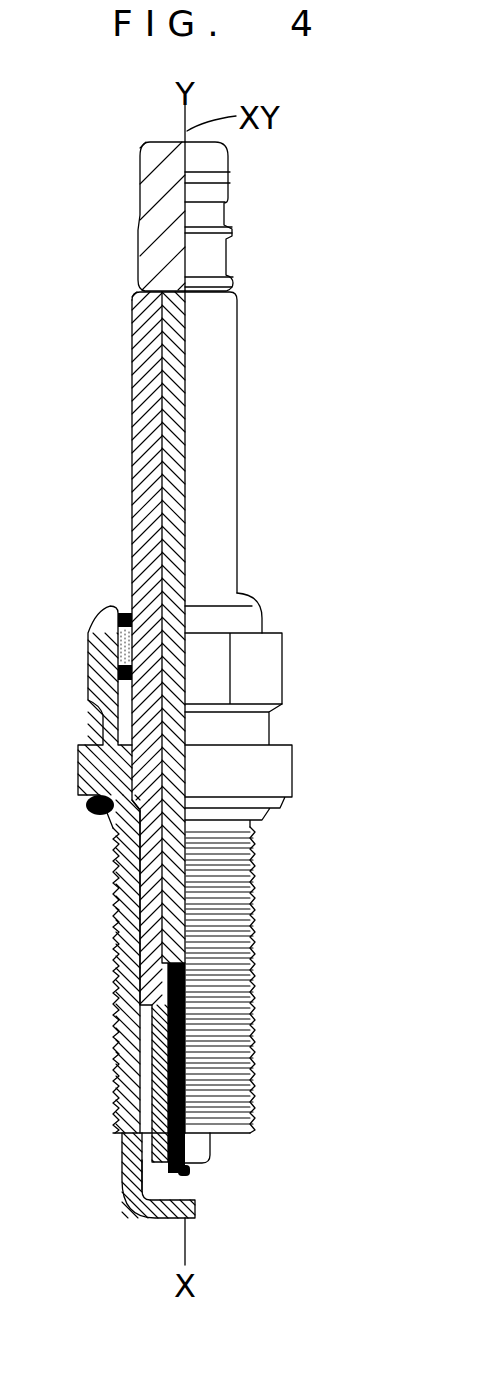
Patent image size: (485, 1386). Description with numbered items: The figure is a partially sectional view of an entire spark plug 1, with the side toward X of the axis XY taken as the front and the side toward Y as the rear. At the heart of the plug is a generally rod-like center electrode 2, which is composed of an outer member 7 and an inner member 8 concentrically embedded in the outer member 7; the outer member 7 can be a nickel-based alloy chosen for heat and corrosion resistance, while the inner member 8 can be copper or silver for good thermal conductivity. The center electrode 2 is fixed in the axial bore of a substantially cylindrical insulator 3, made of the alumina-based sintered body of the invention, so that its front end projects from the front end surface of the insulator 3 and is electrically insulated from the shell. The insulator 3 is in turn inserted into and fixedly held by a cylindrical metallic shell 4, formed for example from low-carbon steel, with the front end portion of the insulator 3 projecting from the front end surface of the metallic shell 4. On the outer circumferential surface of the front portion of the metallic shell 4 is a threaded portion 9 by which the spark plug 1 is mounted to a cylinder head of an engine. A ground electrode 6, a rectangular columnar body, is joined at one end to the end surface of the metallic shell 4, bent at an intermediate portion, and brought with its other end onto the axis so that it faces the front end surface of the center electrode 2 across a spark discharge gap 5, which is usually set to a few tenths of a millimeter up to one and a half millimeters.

The spark plug 1 is at (333, 558).
The center electrode 2 is at (202, 1176).
The insulator 3 is at (115, 1053).
The metallic shell 4 is at (120, 1087).
The spark discharge gap 5 is at (197, 1190).
The ground electrode 6 is at (140, 1214).
The outer member 7 is at (136, 1176).
The inner member 8 is at (140, 1142).
The threaded portion 9 is at (260, 957).